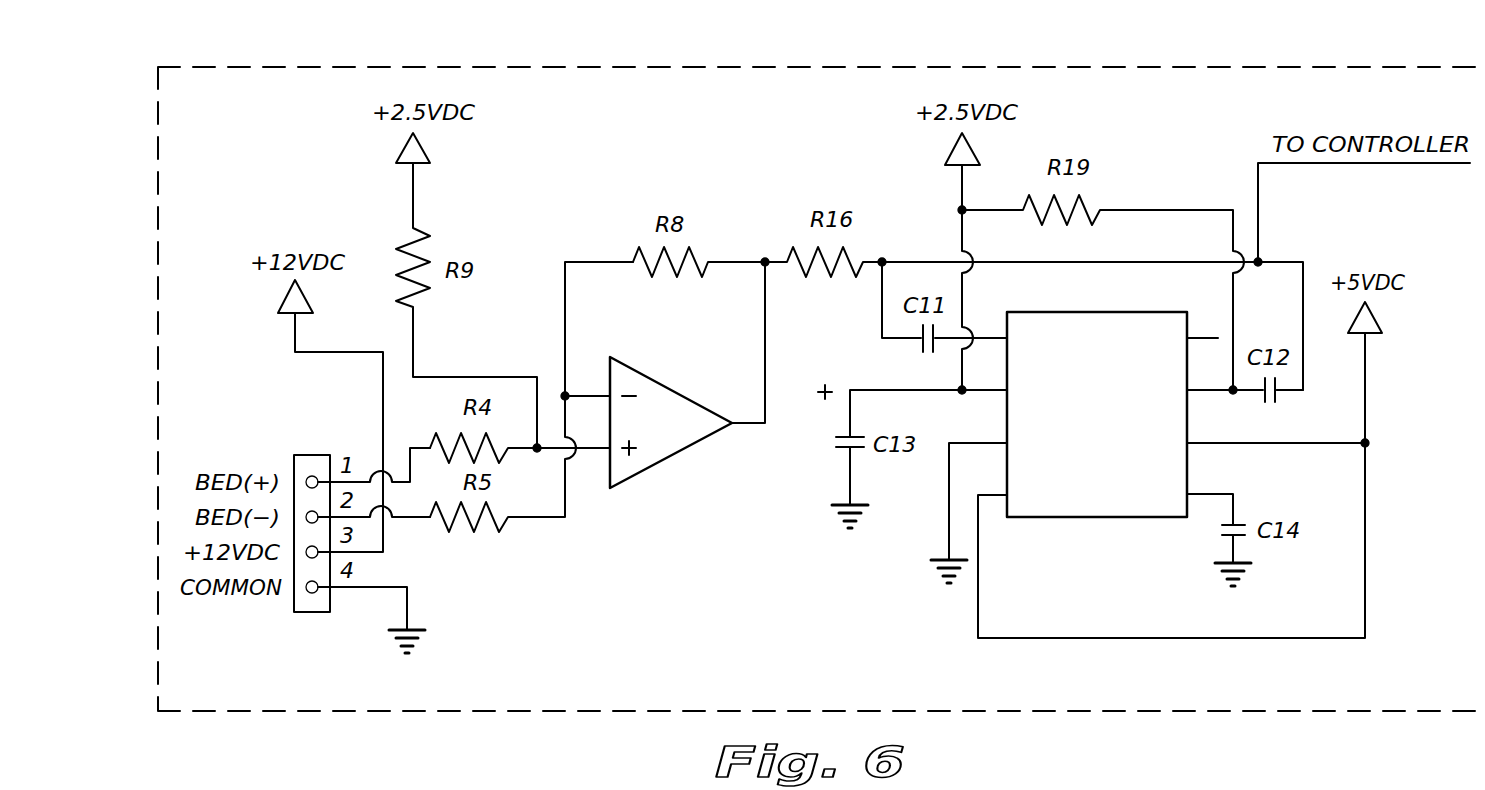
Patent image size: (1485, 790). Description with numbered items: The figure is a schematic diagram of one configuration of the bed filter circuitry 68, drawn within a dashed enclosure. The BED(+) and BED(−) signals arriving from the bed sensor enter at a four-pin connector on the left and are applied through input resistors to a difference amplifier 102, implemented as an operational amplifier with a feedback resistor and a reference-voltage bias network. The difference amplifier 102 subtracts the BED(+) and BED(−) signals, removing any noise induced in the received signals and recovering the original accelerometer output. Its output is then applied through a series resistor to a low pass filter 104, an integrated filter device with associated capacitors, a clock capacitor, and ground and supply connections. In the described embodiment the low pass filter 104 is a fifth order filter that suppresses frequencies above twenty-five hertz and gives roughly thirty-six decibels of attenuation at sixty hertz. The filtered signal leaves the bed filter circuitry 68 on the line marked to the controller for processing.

The bed filter circuitry 68 is at (1118, 64).
The difference amplifier 102 is at (672, 462).
The low pass filter 104 is at (1080, 517).